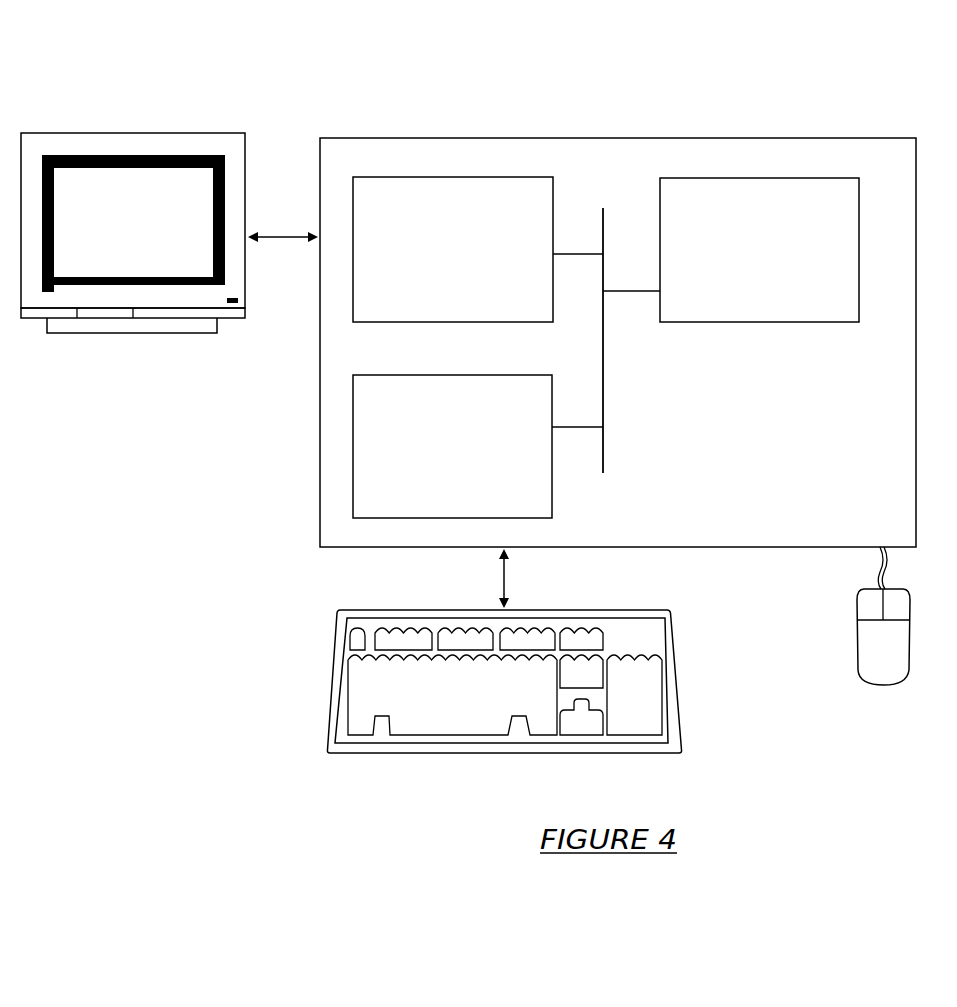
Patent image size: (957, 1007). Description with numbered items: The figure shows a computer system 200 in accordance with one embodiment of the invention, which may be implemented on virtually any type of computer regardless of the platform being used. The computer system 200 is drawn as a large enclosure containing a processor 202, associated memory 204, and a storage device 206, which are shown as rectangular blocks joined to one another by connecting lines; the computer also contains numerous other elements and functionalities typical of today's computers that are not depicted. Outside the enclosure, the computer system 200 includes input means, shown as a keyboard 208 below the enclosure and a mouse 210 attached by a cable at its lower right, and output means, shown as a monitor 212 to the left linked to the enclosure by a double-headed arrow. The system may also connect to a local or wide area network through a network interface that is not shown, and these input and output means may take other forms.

The computer system 200 is at (758, 63).
The processor 202 is at (794, 261).
The associated memory 204 is at (473, 259).
The storage device 206 is at (469, 457).
The keyboard 208 is at (463, 715).
The mouse 210 is at (902, 655).
The monitor 212 is at (151, 236).